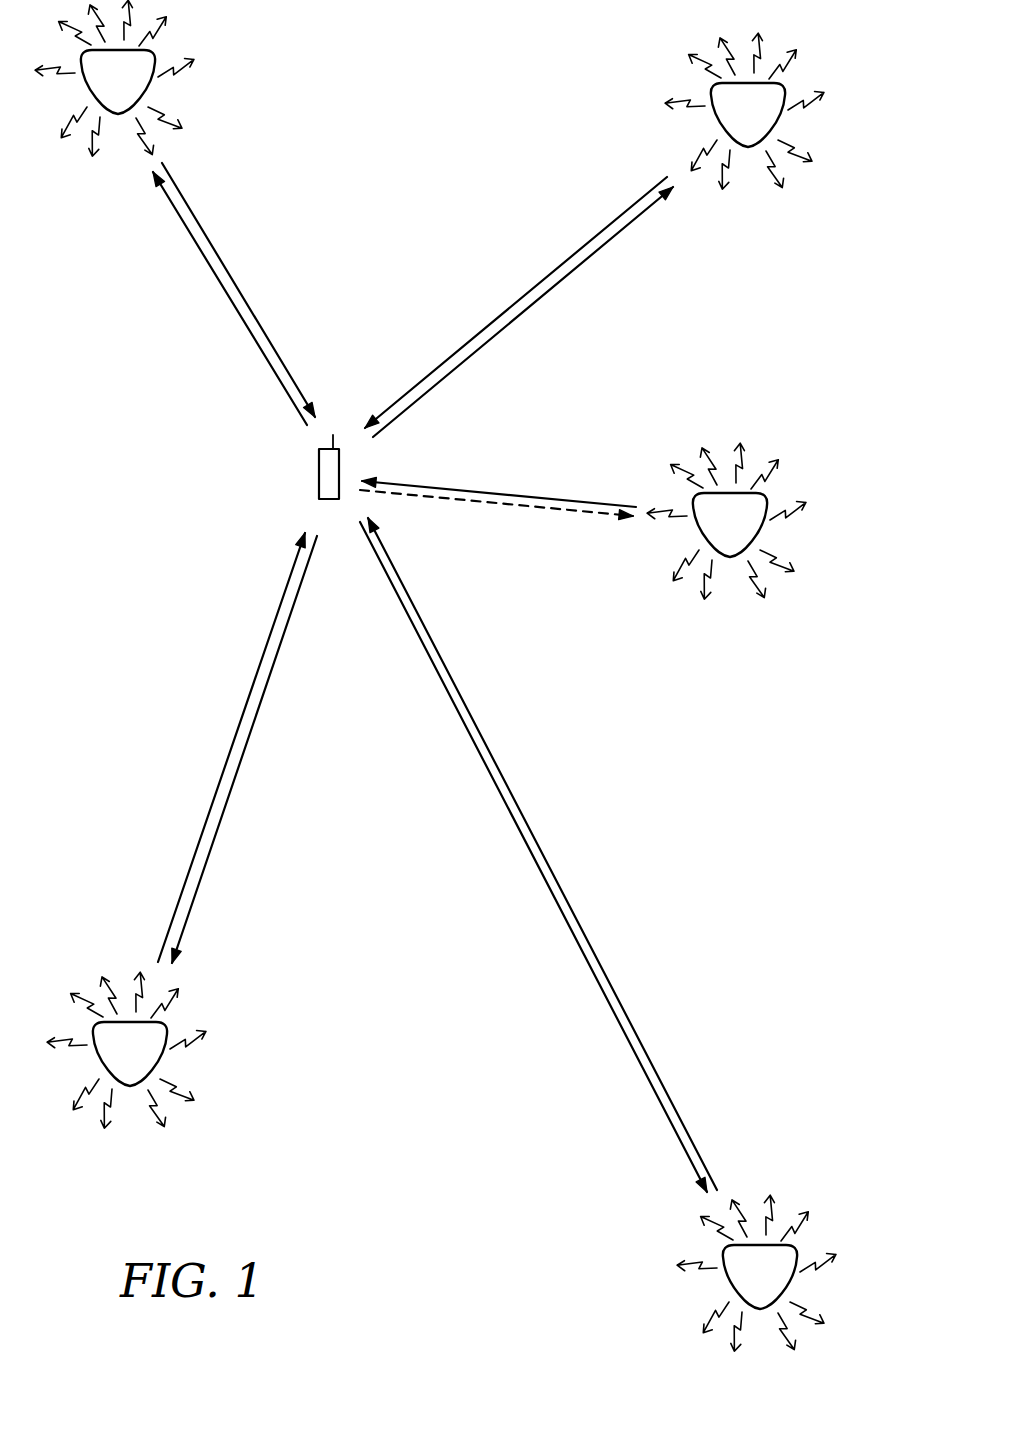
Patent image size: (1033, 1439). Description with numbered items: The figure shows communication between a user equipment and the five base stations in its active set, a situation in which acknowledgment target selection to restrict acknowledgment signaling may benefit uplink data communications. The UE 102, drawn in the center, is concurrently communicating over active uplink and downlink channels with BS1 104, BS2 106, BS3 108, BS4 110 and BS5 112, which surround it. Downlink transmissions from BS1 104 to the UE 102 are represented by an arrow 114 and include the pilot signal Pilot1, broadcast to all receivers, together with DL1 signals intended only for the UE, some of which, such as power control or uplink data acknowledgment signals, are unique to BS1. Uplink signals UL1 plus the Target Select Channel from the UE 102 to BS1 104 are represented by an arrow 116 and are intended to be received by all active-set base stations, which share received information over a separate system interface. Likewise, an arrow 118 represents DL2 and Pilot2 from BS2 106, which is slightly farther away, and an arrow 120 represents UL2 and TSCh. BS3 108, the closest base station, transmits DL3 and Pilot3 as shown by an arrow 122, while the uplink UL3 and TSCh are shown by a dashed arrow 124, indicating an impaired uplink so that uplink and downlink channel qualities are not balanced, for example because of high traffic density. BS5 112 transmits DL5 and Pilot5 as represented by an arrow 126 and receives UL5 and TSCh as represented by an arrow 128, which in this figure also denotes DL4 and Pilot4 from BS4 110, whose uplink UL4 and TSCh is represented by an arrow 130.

The UE 102 is at (319, 462).
The BS1 104 is at (157, 64).
The BS2 106 is at (712, 100).
The BS3 108 is at (731, 567).
The BS4 110 is at (722, 1262).
The BS5 112 is at (170, 1038).
The arrow 114 is at (197, 212).
The arrow 116 is at (178, 210).
The arrow 118 is at (585, 242).
The arrow 120 is at (623, 233).
The arrow 122 is at (608, 500).
The arrow 124 is at (587, 515).
The arrow 126 is at (185, 882).
The arrow 128 is at (630, 1012).
The arrow 130 is at (608, 1012).